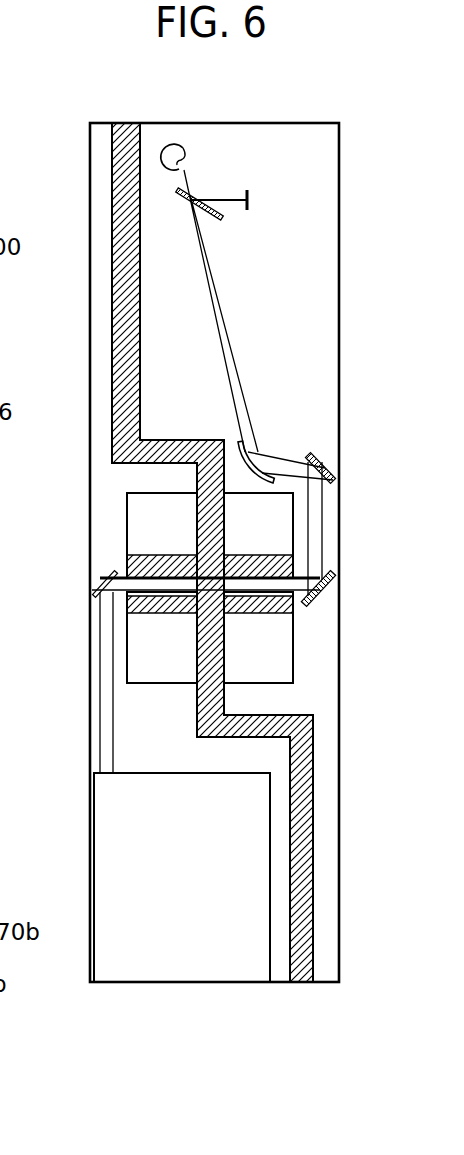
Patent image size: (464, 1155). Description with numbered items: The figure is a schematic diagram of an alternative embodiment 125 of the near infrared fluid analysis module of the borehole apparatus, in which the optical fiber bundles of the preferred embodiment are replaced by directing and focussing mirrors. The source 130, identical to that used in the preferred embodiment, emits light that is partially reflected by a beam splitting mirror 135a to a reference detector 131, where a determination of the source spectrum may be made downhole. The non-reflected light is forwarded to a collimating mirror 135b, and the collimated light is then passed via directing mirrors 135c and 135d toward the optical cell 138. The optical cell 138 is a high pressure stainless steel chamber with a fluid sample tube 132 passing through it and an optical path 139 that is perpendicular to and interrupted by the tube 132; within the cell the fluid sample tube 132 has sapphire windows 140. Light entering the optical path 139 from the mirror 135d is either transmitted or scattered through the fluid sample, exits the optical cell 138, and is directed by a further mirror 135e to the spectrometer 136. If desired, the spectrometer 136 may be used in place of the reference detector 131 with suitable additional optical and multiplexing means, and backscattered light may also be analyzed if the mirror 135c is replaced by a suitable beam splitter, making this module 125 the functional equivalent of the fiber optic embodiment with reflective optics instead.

The alternative embodiment of fluid analysis module 125 is at (346, 711).
The source 130 is at (199, 151).
The reference detector 131 is at (251, 195).
The fluid sample tube 132 is at (142, 147).
The beam splitting mirror 135a is at (222, 218).
The collimating mirror 135b is at (252, 456).
The directing mirror 135c is at (322, 462).
The directing mirror 135d is at (333, 588).
The mirror 135e is at (110, 580).
The spectrometer 136 is at (93, 832).
The optical cell 138 is at (293, 663).
The optical path 139 is at (150, 583).
The sapphire windows 140 is at (227, 570).